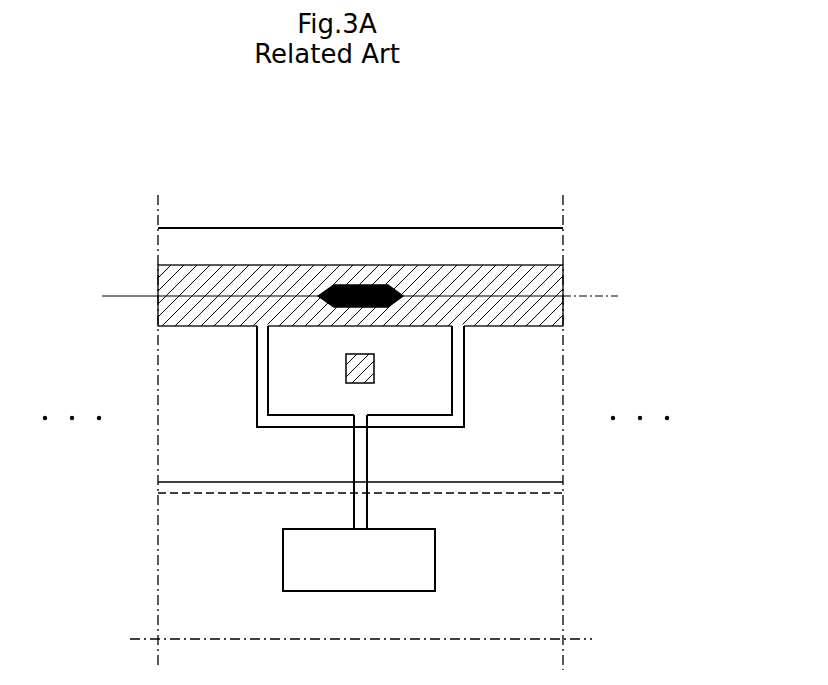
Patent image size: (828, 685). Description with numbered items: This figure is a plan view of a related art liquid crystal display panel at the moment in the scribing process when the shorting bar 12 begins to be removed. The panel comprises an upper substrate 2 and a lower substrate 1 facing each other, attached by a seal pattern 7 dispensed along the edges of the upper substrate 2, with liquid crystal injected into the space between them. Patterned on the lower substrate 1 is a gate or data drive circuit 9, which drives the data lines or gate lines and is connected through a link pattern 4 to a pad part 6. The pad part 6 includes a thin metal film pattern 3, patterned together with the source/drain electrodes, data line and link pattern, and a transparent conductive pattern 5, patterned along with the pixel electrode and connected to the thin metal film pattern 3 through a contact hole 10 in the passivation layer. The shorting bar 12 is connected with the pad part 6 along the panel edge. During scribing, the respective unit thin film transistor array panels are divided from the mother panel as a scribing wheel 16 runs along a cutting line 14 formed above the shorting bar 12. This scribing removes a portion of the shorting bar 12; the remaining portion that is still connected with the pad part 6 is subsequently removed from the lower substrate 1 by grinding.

The lower substrate 1 is at (231, 240).
The upper substrate 2 is at (250, 482).
The thin metal film pattern 3 is at (268, 395).
The link pattern 4 is at (367, 455).
The transparent conductive pattern 5 is at (465, 368).
The pad part 6 is at (351, 376).
The seal pattern 7 is at (553, 487).
The gate or data drive circuit 9 is at (436, 557).
The contact hole 10 is at (374, 370).
The shorting bar 12 is at (545, 282).
The cutting line 14 is at (128, 296).
The scribing wheel 16 is at (360, 285).